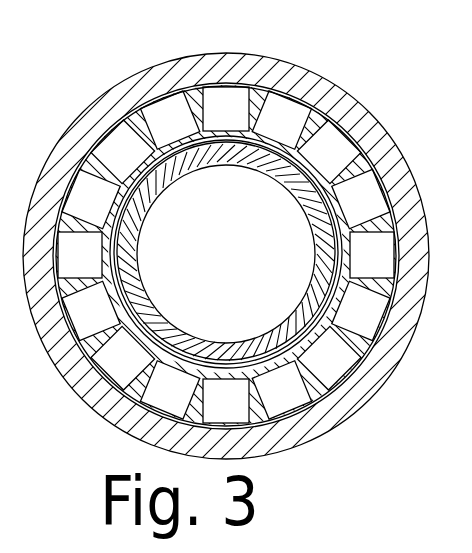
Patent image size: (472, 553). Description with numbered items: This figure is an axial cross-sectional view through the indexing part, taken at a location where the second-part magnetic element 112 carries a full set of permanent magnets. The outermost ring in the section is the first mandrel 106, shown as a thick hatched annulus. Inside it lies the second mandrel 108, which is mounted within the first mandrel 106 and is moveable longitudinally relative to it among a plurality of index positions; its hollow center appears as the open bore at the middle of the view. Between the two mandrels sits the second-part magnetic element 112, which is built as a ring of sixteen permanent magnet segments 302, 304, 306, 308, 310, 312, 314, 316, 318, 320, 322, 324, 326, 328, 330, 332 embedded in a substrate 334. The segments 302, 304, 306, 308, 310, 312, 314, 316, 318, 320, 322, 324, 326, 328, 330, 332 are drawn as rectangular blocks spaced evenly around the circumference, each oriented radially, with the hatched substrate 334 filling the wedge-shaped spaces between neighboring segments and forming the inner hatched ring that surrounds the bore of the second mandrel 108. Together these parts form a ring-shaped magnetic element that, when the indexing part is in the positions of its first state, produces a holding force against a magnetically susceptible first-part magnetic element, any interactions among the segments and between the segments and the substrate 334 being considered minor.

The first mandrel 106 is at (231, 53).
The second-part magnetic element 112 is at (314, 118).
The substrate 334 is at (361, 165).
The second mandrel 108 is at (203, 168).
The permanent magnet segment 302 is at (207, 120).
The permanent magnet segment 304 is at (301, 131).
The permanent magnet segment 306 is at (310, 163).
The permanent magnet segment 308 is at (380, 210).
The permanent magnet segment 310 is at (353, 266).
The permanent magnet segment 312 is at (380, 322).
The permanent magnet segment 314 is at (310, 369).
The permanent magnet segment 316 is at (301, 401).
The permanent magnet segment 318 is at (207, 412).
The permanent magnet segment 320 is at (151, 401).
The permanent magnet segment 322 is at (142, 369).
The permanent magnet segment 324 is at (72, 322).
The permanent magnet segment 326 is at (61, 266).
The permanent magnet segment 328 is at (72, 210).
The permanent magnet segment 330 is at (142, 163).
The permanent magnet segment 332 is at (151, 131).